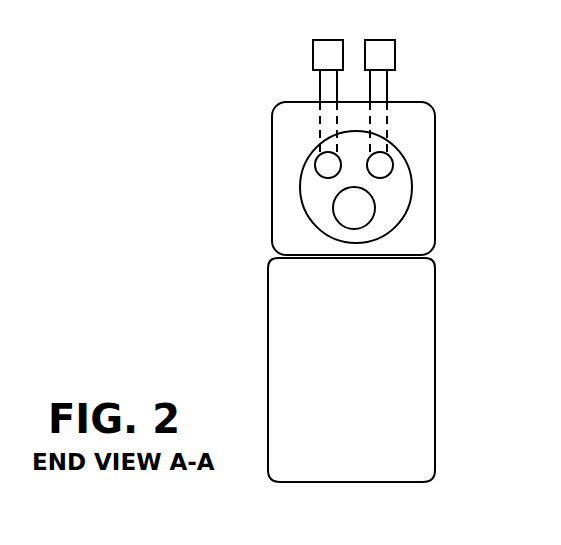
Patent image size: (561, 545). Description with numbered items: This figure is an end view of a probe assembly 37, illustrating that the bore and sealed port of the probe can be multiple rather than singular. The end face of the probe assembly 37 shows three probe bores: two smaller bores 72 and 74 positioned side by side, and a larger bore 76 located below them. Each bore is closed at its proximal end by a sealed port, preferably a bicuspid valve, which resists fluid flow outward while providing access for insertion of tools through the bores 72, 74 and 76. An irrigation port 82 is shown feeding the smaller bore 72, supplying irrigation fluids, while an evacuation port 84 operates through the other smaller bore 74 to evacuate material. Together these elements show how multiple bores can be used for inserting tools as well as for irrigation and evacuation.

The probe assembly 37 is at (207, 190).
The smaller bore 72 is at (327, 163).
The smaller bore 74 is at (385, 163).
The larger bore 76 is at (362, 207).
The irrigation port 82 is at (326, 112).
The evacuation port 84 is at (380, 119).